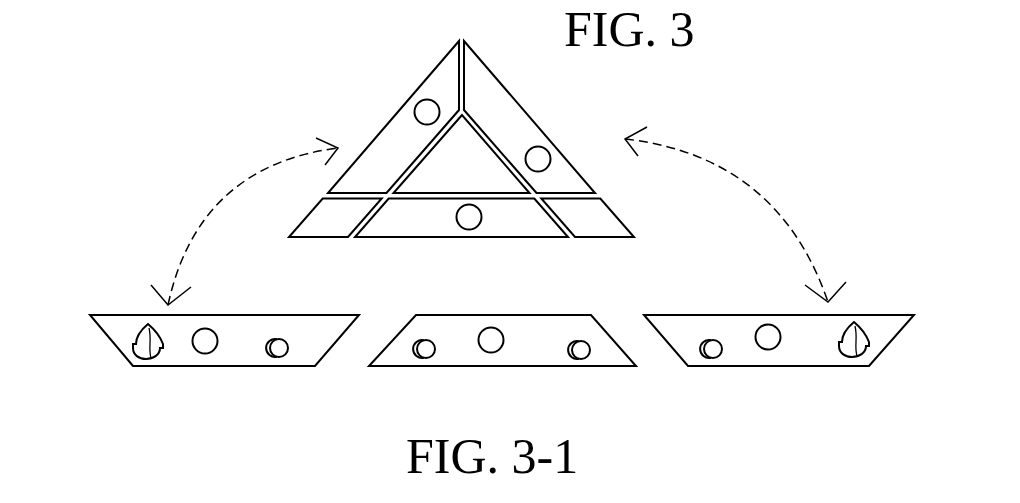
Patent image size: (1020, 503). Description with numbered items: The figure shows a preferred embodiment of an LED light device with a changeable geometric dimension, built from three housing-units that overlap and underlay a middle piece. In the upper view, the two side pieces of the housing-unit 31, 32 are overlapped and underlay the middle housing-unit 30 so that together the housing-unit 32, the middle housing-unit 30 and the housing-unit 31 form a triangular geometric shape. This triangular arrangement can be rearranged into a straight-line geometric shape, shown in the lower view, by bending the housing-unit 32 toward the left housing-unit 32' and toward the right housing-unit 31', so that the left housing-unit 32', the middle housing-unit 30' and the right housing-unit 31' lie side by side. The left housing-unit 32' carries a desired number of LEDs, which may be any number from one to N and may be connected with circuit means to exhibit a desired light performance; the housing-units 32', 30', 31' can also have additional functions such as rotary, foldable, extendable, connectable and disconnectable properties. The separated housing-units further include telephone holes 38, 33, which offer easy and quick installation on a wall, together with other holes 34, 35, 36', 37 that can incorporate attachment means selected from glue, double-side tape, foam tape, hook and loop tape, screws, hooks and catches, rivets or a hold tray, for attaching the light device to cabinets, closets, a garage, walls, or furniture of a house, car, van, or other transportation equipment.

In FIG. 3, the middle housing-unit 30 is at (461, 241).
In FIG. 3, the housing-unit 31 is at (543, 117).
In FIG. 3, the housing-unit 32 is at (393, 117).
In FIG. 3-1, the middle housing-unit in straight-line arrangement 30' is at (502, 365).
In FIG. 3-1, the right housing-unit 31' is at (779, 306).
In FIG. 3-1, the left housing-unit 32' is at (224, 315).
In FIG. 3-1, the telephone hole 33 is at (848, 348).
In FIG. 3-1, the hole 34 is at (715, 353).
In FIG. 3-1, the hole 35 is at (585, 355).
In FIG. 3-1, the hole 36' is at (420, 378).
In FIG. 3-1, the hole 37 is at (280, 355).
In FIG. 3-1, the telephone hole 38 is at (149, 351).